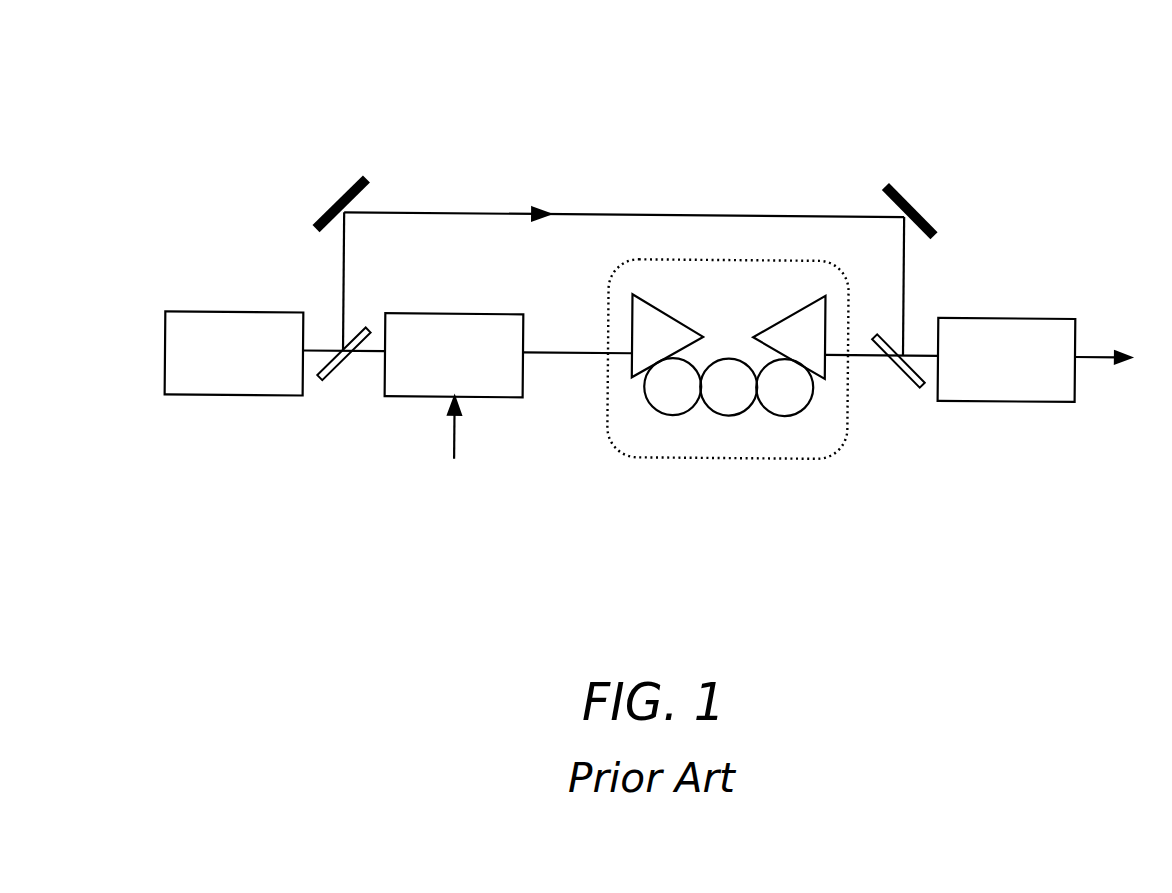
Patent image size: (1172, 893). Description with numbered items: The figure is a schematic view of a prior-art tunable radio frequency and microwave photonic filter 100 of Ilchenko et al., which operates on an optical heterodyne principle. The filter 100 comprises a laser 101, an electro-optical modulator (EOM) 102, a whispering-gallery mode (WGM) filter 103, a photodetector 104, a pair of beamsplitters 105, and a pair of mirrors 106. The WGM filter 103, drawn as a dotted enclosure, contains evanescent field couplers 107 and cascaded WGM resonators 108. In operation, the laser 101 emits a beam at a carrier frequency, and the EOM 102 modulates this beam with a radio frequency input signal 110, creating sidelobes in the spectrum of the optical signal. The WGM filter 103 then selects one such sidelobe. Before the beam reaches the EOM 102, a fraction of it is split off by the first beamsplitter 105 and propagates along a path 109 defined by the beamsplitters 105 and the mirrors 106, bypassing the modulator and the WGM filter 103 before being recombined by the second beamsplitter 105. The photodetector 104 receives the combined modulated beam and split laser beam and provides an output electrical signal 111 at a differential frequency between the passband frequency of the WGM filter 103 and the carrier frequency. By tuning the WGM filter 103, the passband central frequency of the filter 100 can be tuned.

The filter 100 is at (897, 60).
The laser 101 is at (216, 315).
The electro-optical modulator (EOM) 102 is at (441, 316).
The whispering-gallery mode (WGM) filter 103 is at (660, 458).
The photodetector 104 is at (1003, 315).
The beamsplitters 105 is at (318, 383).
The mirrors 106 is at (363, 179).
The evanescent field couplers 107 is at (632, 312).
The cascaded WGM resonators 108 is at (678, 401).
The path 109 is at (607, 208).
The radio frequency input signal 110 is at (455, 460).
The output electrical signal 111 is at (1117, 359).